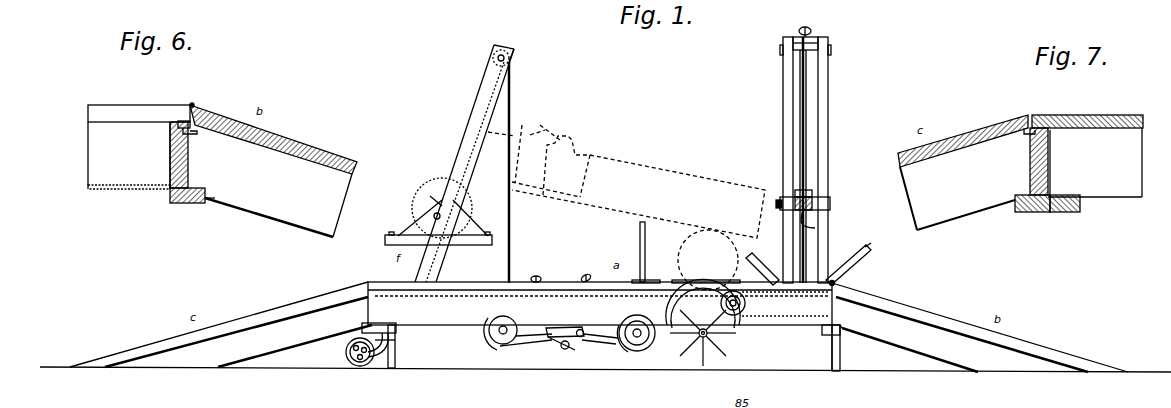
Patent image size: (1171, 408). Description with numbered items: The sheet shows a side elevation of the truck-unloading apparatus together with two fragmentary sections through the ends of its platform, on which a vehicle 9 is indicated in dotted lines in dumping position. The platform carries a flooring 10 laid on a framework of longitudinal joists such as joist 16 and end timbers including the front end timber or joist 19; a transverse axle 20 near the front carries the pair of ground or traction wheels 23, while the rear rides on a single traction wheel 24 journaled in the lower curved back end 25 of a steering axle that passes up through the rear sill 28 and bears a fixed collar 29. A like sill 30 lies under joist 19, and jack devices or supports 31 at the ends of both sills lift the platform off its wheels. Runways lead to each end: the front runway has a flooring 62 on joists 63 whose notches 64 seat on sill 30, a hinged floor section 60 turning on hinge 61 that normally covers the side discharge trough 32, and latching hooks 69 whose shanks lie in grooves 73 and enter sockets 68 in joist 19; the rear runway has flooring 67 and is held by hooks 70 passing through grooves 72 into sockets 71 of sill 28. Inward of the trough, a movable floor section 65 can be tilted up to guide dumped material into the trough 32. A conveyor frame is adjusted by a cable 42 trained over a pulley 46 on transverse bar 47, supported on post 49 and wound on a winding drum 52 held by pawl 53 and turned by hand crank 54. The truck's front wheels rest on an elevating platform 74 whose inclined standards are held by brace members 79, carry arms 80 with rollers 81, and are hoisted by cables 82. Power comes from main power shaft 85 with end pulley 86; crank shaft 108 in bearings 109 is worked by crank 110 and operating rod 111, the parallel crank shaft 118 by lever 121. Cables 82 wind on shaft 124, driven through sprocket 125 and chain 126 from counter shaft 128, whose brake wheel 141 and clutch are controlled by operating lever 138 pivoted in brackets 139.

In FIG. 1, the load 9 is at (626, 207).
In FIG. 1, the flooring 10 is at (556, 288).
In FIG. 7, the longitudinally extending timber or joist 16 is at (1132, 193).
In FIG. 6, the front end timber or joist 19 is at (188, 166).
In FIG. 1, the axle 20 is at (720, 366).
In FIG. 1, the ground or traction wheels 23 is at (740, 348).
In FIG. 1, the ground or traction wheel 24 is at (346, 352).
In FIG. 1, the lower curved back end 25 is at (395, 341).
In FIG. 7, the stringer or sill 28 is at (1070, 212).
In FIG. 1, the stringer or sill 28 is at (364, 324).
In FIG. 1, the fixed shoulder or collar 29 is at (386, 333).
In FIG. 6, the stringer or sill 30 is at (188, 204).
In FIG. 1, the stringer or sill 30 is at (822, 330).
In FIG. 1, the jack devices or supports 31 is at (396, 358).
In FIG. 6, the side discharge trough 32 is at (130, 188).
In FIG. 1, the cable 42 is at (806, 82).
In FIG. 1, the sheave or pulley 46 is at (809, 29).
In FIG. 1, the transversely extending bar 47 is at (818, 42).
In FIG. 1, the post 49 is at (783, 118).
In FIG. 1, the winding drum 52 is at (816, 228).
In FIG. 1, the pawl or dog 53 is at (812, 192).
In FIG. 1, the hand crank 54 is at (776, 205).
In FIG. 6, the floor section 60 is at (127, 108).
In FIG. 1, the floor section 60 is at (867, 252).
In FIG. 6, the hinge 61 is at (195, 106).
In FIG. 1, the hinge 61 is at (836, 283).
In FIG. 6, the flooring 62 is at (292, 145).
In FIG. 1, the flooring 62 is at (936, 318).
In FIG. 6, the timbers or joists 63 is at (280, 213).
In FIG. 1, the timbers or joists 63 is at (914, 345).
In FIG. 6, the notch 64 is at (208, 193).
In FIG. 1, the notch 64 is at (840, 326).
In FIG. 1, the movable section 65 is at (756, 262).
In FIG. 7, the flooring 67 is at (968, 132).
In FIG. 1, the flooring 67 is at (270, 312).
In FIG. 6, the bores or sockets 68 is at (169, 148).
In FIG. 1, the bores or sockets 68 is at (247, 360).
In FIG. 6, the latching hooks 69 is at (197, 133).
In FIG. 7, the hooks 70 is at (1050, 155).
In FIG. 7, the openings or sockets 71 is at (1036, 212).
In FIG. 7, the grooves 72 is at (1045, 128).
In FIG. 6, the grooves 73 is at (180, 121).
In FIG. 1, the flooring section or elevating platform 74 is at (474, 245).
In FIG. 1, the brace members 79 is at (410, 225).
In FIG. 1, the arms 80 is at (433, 213).
In FIG. 1, the rollers 81 is at (433, 197).
In FIG. 1, the cables 82 is at (511, 108).
In FIG. 1, the main power shaft 85 is at (746, 303).
In FIG. 1, the end gear or pulley 86 is at (721, 306).
In FIG. 1, the crank shaft 108 is at (604, 343).
In FIG. 1, the bearings 109 is at (570, 327).
In FIG. 1, the crank 110 is at (579, 337).
In FIG. 1, the operating rod 111 is at (591, 269).
In FIG. 1, the crank shaft 118 is at (562, 349).
In FIG. 1, the operating arm or lever 121 is at (539, 270).
In FIG. 1, the shaft 124 is at (500, 326).
In FIG. 1, the sprocket 125 is at (490, 344).
In FIG. 1, the sprocket chain 126 is at (530, 344).
In FIG. 1, the counter shaft 128 is at (640, 338).
In FIG. 1, the operating lever 138 is at (646, 243).
In FIG. 1, the brackets 139 is at (648, 279).
In FIG. 1, the brake wheel 141 is at (629, 347).